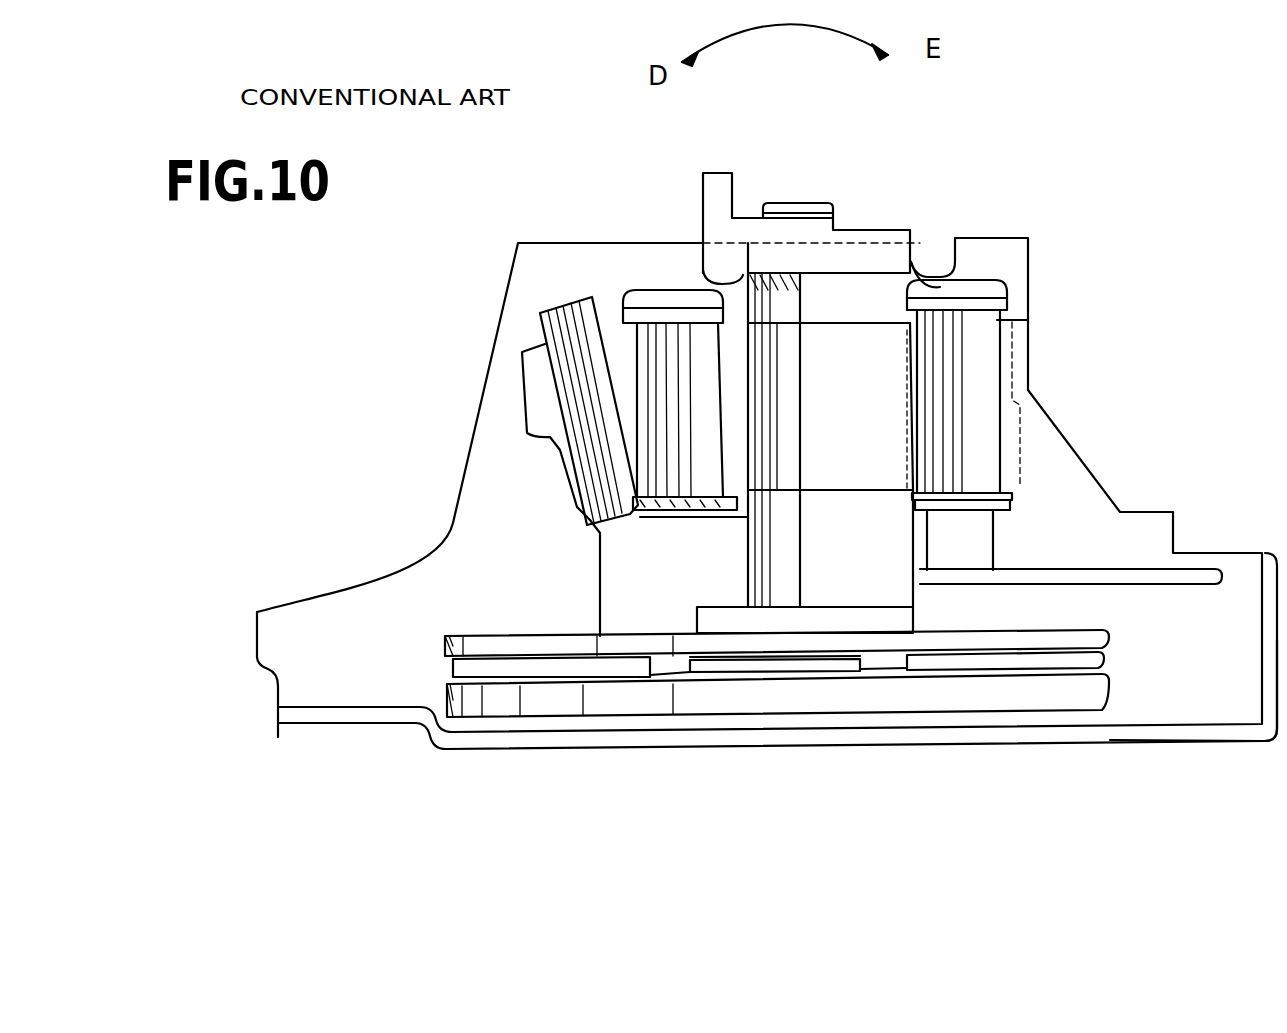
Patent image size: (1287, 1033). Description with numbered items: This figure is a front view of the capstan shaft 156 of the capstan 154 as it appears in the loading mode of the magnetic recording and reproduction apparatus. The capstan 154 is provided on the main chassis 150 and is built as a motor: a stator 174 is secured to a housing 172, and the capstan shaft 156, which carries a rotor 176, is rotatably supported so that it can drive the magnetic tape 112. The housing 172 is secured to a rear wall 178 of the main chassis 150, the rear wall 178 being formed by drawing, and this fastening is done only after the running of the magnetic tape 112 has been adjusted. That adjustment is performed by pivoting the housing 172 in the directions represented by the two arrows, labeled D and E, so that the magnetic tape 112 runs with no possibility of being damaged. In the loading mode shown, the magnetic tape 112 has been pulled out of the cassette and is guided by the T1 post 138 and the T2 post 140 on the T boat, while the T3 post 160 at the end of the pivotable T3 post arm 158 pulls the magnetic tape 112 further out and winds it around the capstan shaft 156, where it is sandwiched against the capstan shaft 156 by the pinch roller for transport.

The magnetic tape 112 is at (527, 442).
The T1 post 138 is at (538, 322).
The T2 post 140 is at (668, 512).
The main chassis 150 is at (697, 750).
The capstan 154 is at (1122, 722).
The capstan shaft 156 is at (790, 554).
The T3 post arm 158 is at (1163, 584).
The T3 post 160 is at (978, 342).
The housing 172 is at (850, 297).
The stator 174 is at (987, 647).
The rotor 176 is at (543, 703).
The rear wall 178 is at (580, 262).